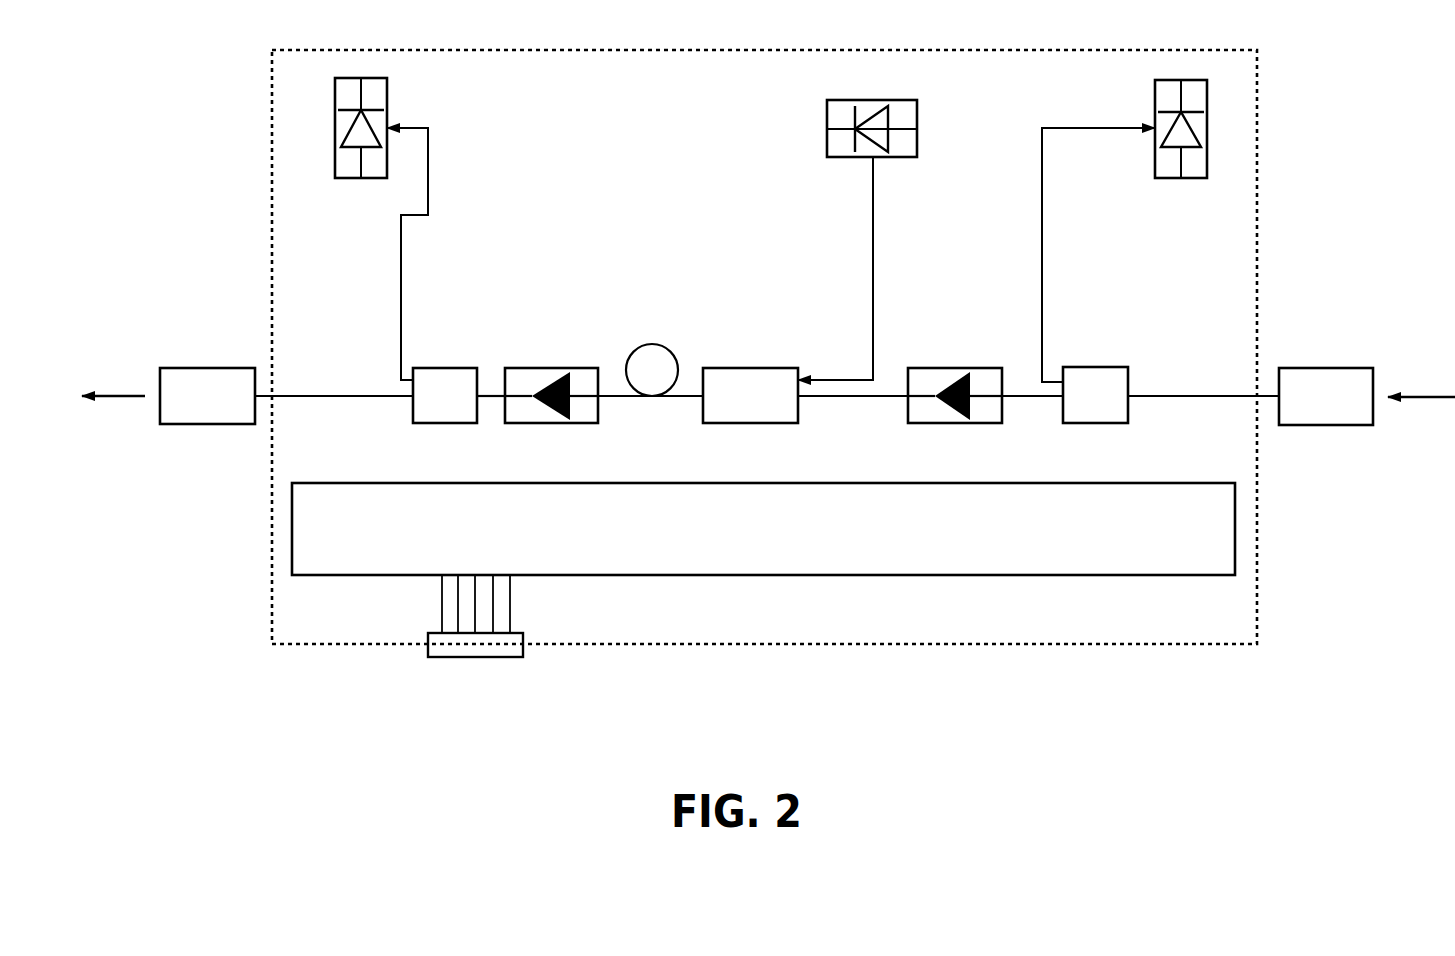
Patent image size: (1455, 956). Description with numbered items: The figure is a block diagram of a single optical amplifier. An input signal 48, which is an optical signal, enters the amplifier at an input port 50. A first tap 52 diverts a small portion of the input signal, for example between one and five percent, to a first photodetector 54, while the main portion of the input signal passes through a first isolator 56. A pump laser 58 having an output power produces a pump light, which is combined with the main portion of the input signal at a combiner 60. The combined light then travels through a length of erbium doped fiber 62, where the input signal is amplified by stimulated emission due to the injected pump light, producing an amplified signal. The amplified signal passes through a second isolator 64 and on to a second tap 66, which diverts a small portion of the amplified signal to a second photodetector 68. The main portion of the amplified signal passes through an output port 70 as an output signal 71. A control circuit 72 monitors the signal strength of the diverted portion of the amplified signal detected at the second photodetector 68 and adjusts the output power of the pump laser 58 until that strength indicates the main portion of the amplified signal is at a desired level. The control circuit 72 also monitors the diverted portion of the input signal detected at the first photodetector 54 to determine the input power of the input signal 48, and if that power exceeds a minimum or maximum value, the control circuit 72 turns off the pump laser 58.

The input signal 48 is at (1421, 397).
The input port 50 is at (1320, 368).
The first tap 52 is at (1097, 424).
The first photodetector 54 is at (1207, 172).
The first isolator 56 is at (960, 424).
The pump laser 58 is at (827, 145).
The combiner 60 is at (750, 368).
The erbium doped fiber 62 is at (641, 346).
The second isolator 64 is at (556, 424).
The second tap 66 is at (445, 424).
The second photodetector 68 is at (335, 168).
The output port 70 is at (210, 368).
The output signal 71 is at (121, 396).
The control circuit 72 is at (782, 576).